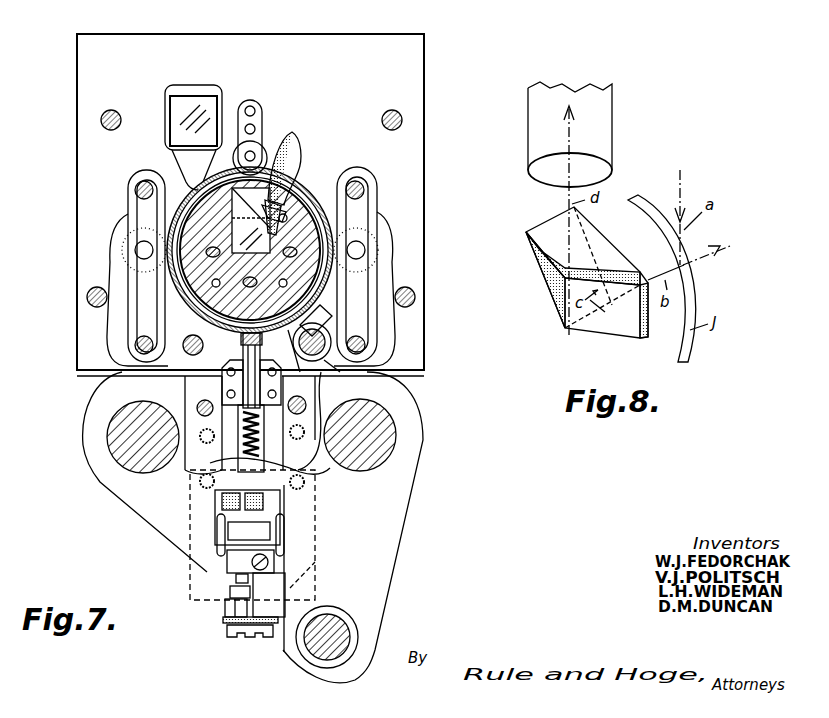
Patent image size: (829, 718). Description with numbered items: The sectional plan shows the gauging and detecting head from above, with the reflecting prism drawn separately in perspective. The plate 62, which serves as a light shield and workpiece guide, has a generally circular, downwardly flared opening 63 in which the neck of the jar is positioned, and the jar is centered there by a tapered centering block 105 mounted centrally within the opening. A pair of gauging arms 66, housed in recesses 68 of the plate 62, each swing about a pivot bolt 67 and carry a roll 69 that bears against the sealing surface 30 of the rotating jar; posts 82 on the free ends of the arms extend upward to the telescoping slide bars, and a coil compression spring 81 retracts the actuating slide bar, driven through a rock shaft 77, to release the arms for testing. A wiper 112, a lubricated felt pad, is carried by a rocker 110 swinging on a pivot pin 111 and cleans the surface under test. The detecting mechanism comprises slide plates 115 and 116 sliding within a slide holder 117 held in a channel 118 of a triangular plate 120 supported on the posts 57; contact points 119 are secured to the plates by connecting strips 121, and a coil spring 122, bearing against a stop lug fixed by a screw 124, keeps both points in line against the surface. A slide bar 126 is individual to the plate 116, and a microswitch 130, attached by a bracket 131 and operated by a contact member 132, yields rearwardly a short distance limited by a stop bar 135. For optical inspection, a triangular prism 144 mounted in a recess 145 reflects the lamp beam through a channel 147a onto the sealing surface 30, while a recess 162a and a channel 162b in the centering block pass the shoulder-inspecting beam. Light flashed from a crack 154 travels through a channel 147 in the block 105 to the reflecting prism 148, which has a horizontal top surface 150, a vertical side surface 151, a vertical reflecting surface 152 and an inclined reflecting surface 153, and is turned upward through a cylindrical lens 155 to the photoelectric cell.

In FIG. 7, the plate 62 is at (413, 68).
In FIG. 7, the triangular prism 144 is at (195, 100).
In FIG. 7, the recess 145 is at (224, 108).
In FIG. 7, the channel 147a is at (185, 168).
In FIG. 7, the sealing surface 30 is at (207, 180).
In FIG. 8, the sealing surface 30 is at (696, 296).
In FIG. 7, the opening 63 is at (300, 192).
In FIG. 7, the channel 147 is at (239, 220).
In FIG. 7, the reflecting prism 148 is at (256, 239).
In FIG. 8, the reflecting prism 148 is at (545, 285).
In FIG. 7, the recess 162a is at (296, 143).
In FIG. 7, the channel 162b is at (278, 186).
In FIG. 7, the gauging arms 66 is at (365, 206).
In FIG. 7, the roll 69 is at (125, 247).
In FIG. 7, the pivot bolt 67 is at (140, 190).
In FIG. 7, the recesses 68 is at (386, 280).
In FIG. 7, the posts 82 is at (147, 337).
In FIG. 7, the centering block 105 is at (149, 287).
In FIG. 7, the wiper 112 is at (310, 310).
In FIG. 7, the rocker 110 is at (328, 335).
In FIG. 7, the contact points 119 is at (245, 340).
In FIG. 7, the connecting strips 121 is at (243, 355).
In FIG. 7, the pivot pin 111 is at (322, 376).
In FIG. 7, the channel 118 is at (188, 392).
In FIG. 7, the slide plate 116 is at (275, 434).
In FIG. 7, the coil spring 122 is at (260, 437).
In FIG. 7, the slide plate 115 is at (230, 436).
In FIG. 7, the slide holder 117 is at (225, 466).
In FIG. 7, the screw 124 is at (278, 471).
In FIG. 7, the posts 57 is at (112, 437).
In FIG. 7, the triangular plate 120 is at (402, 486).
In FIG. 7, the coil compression spring 81 is at (280, 498).
In FIG. 7, the stop bar 135 is at (220, 530).
In FIG. 7, the slide bar 126 is at (270, 600).
In FIG. 7, the contact member 132 is at (240, 568).
In FIG. 7, the bracket 131 is at (232, 596).
In FIG. 7, the microswitch 130 is at (232, 609).
In FIG. 7, the rock shaft 77 is at (340, 628).
In FIG. 8, the cylindrical lens 155 is at (604, 120).
In FIG. 8, the horizontal top surface 150 is at (556, 222).
In FIG. 8, the vertical side surface 151 is at (600, 230).
In FIG. 8, the reflecting surface 153 is at (548, 243).
In FIG. 8, the vertical reflecting surface 152 is at (600, 326).
In FIG. 8, the crack 154 is at (688, 262).